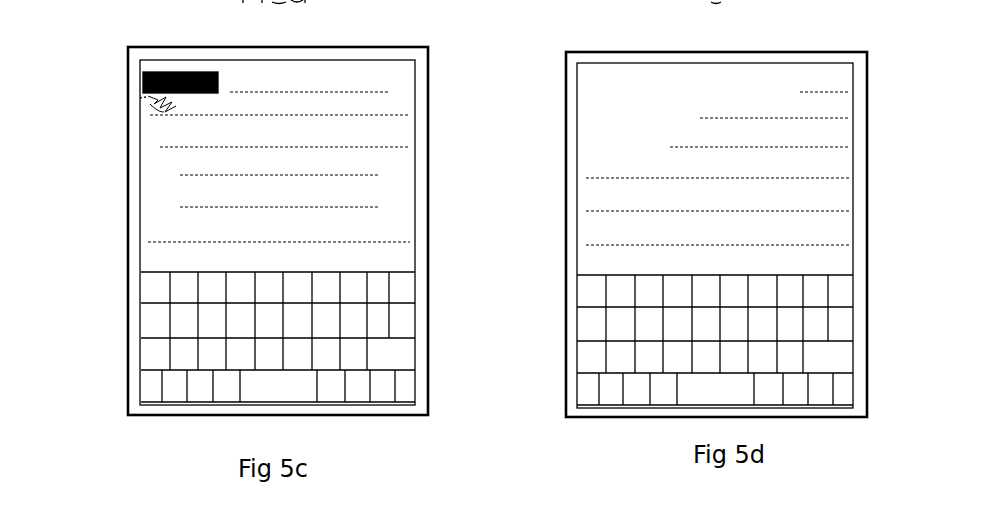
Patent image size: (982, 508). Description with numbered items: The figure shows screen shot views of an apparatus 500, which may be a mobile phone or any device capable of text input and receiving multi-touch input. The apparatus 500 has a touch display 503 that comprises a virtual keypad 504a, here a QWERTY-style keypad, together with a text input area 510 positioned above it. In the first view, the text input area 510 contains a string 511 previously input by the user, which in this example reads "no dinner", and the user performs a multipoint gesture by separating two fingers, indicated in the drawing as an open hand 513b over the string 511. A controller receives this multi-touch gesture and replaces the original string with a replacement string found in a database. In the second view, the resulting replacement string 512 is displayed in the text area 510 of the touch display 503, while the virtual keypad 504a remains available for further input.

In FIG. 5C, the apparatus 500 is at (116, 61).
In FIG. 5D, the apparatus 500 is at (553, 72).
In FIG. 5C, the touch display 503 is at (128, 233).
In FIG. 5D, the touch display 503 is at (567, 233).
In FIG. 5C, the text input area 510 is at (148, 162).
In FIG. 5D, the text input area 510 is at (595, 172).
In FIG. 5C, the string 511 is at (153, 72).
In FIG. 5D, the replacement string 512 is at (603, 82).
In FIG. 5C, the open hand 513b is at (140, 98).
In FIG. 5C, the virtual keypad 504a is at (140, 295).
In FIG. 5D, the virtual keypad 504a is at (577, 303).